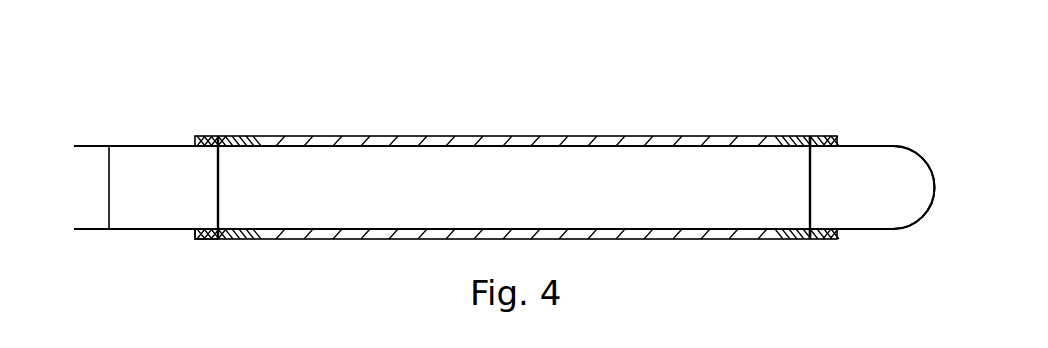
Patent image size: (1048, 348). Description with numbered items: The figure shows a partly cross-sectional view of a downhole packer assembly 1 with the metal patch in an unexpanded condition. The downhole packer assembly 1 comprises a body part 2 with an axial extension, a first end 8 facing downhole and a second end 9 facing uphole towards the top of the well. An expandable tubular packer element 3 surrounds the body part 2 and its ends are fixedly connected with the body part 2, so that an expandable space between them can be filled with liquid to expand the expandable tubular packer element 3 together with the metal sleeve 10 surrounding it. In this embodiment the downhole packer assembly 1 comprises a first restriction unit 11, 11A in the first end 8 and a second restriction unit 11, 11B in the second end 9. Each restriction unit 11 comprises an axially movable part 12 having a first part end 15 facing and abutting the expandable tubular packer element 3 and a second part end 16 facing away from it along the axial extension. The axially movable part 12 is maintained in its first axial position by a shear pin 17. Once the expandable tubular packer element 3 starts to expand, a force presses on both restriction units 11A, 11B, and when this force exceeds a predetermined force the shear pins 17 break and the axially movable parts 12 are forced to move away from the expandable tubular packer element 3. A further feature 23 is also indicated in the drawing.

The downhole packer assembly 1 is at (118, 72).
The body part 2 is at (142, 165).
The expandable tubular packer element 3 is at (630, 182).
The first end 8 is at (900, 187).
The second end 9 is at (158, 202).
The metal sleeve 10 is at (457, 136).
The restriction unit 11 is at (797, 135).
The first restriction unit 11A is at (817, 240).
The second restriction unit 11B is at (228, 136).
The axially movable part 12 is at (236, 240).
The first part end 15 is at (253, 136).
The second part end 16 is at (197, 240).
The shear pin 17 is at (200, 136).
The section 23 is at (181, 341).